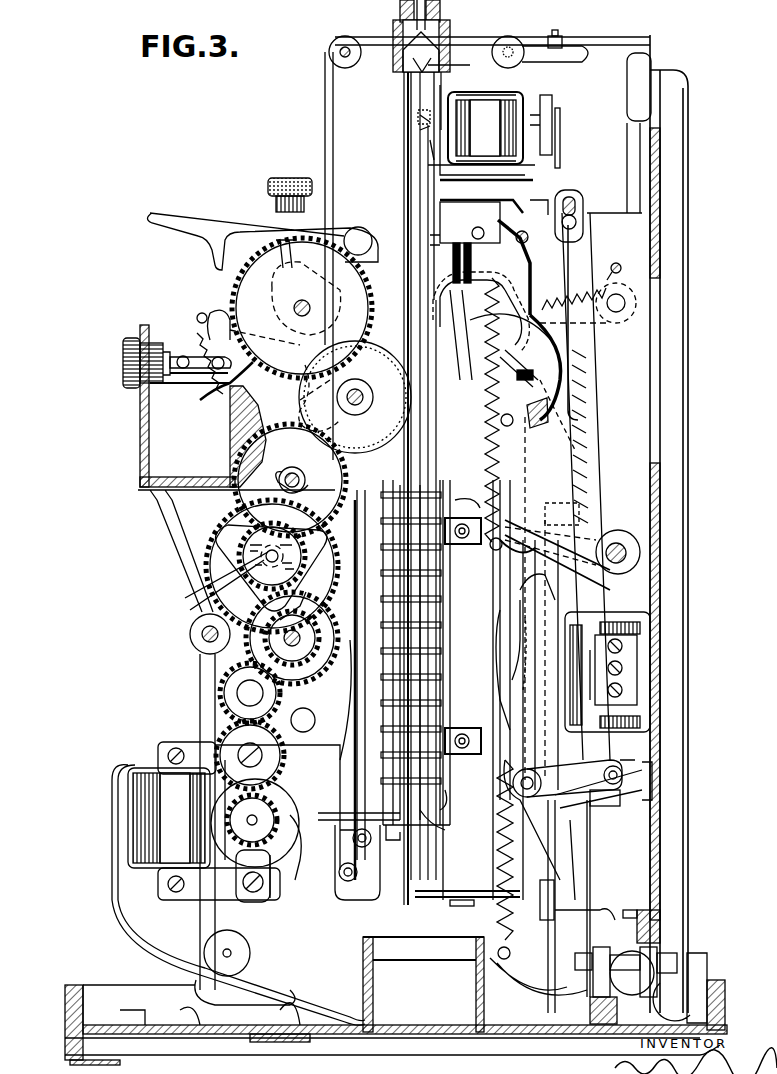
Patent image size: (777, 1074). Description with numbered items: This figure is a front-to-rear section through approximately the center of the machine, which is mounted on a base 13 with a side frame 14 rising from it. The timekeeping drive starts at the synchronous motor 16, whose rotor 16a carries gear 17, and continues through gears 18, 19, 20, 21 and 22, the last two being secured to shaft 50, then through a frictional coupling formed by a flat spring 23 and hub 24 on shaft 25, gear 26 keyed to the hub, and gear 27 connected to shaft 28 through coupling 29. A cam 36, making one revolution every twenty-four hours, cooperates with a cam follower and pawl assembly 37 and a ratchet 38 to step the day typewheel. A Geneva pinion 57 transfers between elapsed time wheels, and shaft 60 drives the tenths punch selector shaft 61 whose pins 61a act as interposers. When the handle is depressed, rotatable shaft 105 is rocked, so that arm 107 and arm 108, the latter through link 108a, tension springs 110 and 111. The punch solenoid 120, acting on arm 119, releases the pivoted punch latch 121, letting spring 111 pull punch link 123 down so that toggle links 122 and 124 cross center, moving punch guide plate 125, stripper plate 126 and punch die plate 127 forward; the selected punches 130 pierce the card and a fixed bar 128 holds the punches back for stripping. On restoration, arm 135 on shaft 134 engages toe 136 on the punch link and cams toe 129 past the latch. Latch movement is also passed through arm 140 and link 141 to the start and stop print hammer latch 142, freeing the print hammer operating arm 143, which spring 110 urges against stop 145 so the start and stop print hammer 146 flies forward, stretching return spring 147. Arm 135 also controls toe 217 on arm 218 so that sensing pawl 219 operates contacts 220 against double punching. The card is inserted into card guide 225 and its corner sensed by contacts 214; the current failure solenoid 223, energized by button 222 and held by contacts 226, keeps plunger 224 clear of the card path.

The base 13 is at (75, 1015).
The side frame 14 is at (232, 908).
The synchronous motor 16 is at (148, 790).
The rotor 16a is at (292, 862).
The gear 17 is at (275, 808).
The gear 18 is at (278, 770).
The gear 19 is at (280, 694).
The gear 20 is at (315, 608).
The gear 21 is at (322, 630).
The gear 22 is at (237, 541).
The flat spring 23 is at (250, 520).
The hub 24 is at (205, 553).
The shaft 25 is at (192, 607).
The gear 26 is at (192, 634).
The gear 27 is at (262, 468).
The shaft 28 is at (292, 472).
The coupling 29 is at (294, 490).
The cam 36 is at (270, 284).
The cam follower and pawl assembly 37 is at (225, 218).
The ratchet 38 is at (330, 407).
The shaft 50 is at (285, 642).
The Geneva pinion 57 is at (200, 340).
The shaft 60 is at (358, 392).
The tenths punch selector shaft 61 is at (352, 762).
The pin 61a is at (355, 752).
The rotatable shaft 105 is at (620, 545).
The arm 107 is at (548, 560).
The arm 108 is at (535, 960).
The link 108a is at (520, 594).
The spring 110 is at (512, 446).
The spring 111 is at (512, 828).
The arm 119 is at (640, 760).
The punch solenoid 120 is at (640, 625).
The punch latch 121 is at (507, 622).
The toggle link 122 is at (412, 690).
The punch link 123 is at (508, 576).
The toggle link 124 is at (538, 505).
The punch guide plate 125 is at (455, 820).
The stripper plate 126 is at (440, 800).
The punch die plate 127 is at (430, 700).
The fixed bar 128 is at (403, 610).
The toe 129 is at (535, 652).
The punches 130 is at (415, 650).
The shaft 134 is at (625, 305).
The arm 135 is at (604, 323).
The toe 136 is at (511, 239).
The arm 140 is at (575, 798).
The link 141 is at (592, 385).
The start and stop print hammer latch 142 is at (500, 225).
The print hammer operating arm 143 is at (550, 403).
The stop 145 is at (497, 480).
The start and stop print hammer 146 is at (558, 358).
The return spring 147 is at (608, 264).
The contacts 214 is at (478, 905).
The toe 217 is at (492, 236).
The arm 218 is at (520, 360).
The sensing pawl 219 is at (410, 410).
The contacts 220 is at (420, 312).
The button 222 is at (122, 362).
The current failure solenoid 223 is at (482, 98).
The plunger 224 is at (430, 125).
The card guide 225 is at (428, 157).
The contacts 226 is at (556, 118).